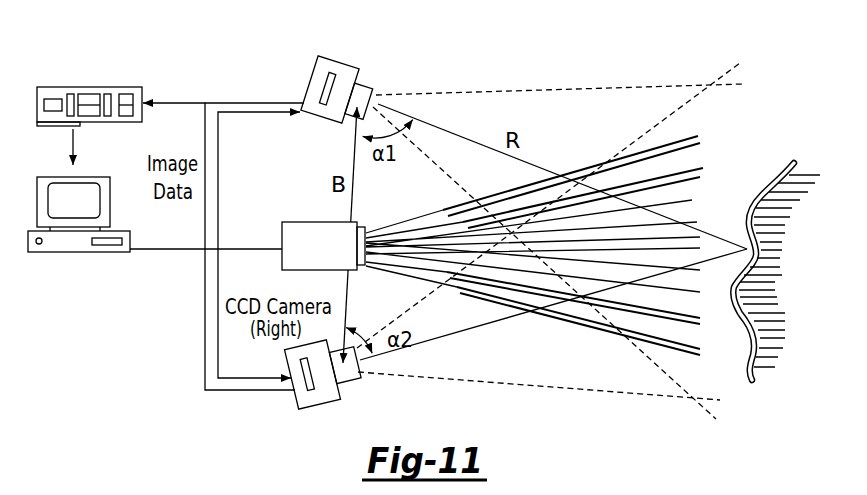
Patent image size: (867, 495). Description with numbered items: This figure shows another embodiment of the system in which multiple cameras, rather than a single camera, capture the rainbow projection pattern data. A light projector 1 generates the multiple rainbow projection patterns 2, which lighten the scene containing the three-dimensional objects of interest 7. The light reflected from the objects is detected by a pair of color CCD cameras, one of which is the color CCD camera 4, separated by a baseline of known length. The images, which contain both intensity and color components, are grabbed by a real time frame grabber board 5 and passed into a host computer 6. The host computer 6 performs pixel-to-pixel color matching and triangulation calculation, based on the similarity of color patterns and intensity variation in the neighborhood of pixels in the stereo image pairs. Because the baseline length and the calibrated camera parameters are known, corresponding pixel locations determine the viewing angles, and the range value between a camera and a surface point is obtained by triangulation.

The light projector 1 is at (305, 236).
The multiple rainbow projection patterns 2 is at (534, 245).
The color CCD camera 4 is at (287, 71).
The real time frame grabber board 5 is at (92, 93).
The host computer 6 is at (83, 242).
The 3D objects of interest 7 is at (758, 269).